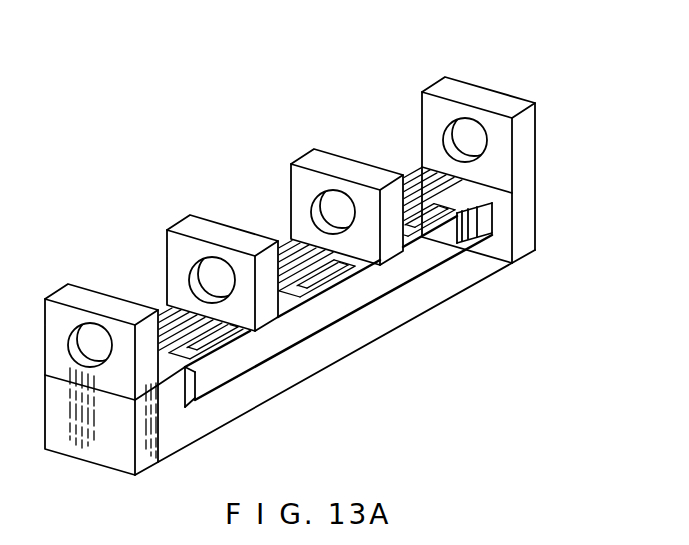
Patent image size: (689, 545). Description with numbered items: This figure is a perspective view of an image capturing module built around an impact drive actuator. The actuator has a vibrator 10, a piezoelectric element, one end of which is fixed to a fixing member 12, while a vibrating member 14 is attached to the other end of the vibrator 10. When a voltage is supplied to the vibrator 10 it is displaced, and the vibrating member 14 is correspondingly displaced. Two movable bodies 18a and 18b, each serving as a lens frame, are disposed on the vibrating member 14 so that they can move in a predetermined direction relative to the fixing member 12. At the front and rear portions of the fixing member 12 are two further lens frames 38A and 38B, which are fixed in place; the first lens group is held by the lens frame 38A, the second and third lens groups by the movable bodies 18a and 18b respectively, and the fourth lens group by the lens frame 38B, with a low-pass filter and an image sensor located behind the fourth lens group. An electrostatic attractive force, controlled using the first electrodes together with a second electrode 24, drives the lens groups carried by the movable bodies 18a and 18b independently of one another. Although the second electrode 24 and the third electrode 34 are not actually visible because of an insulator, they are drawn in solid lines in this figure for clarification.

The vibrator 10 is at (468, 228).
The fixing member 12 is at (528, 205).
The vibrating member 14 is at (208, 372).
The movable body 18a is at (212, 216).
The movable body 18b is at (332, 148).
The second electrode 24 is at (307, 268).
The third electrode 34 is at (222, 343).
The lens frame 38A is at (90, 285).
The lens frame 38B is at (468, 76).